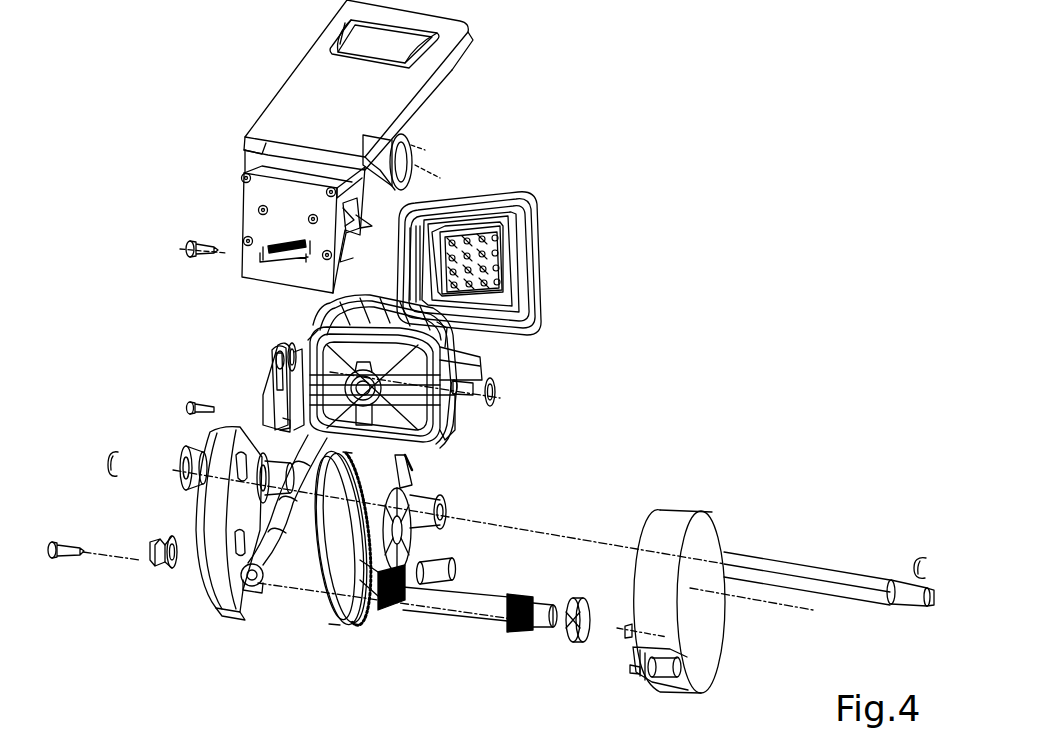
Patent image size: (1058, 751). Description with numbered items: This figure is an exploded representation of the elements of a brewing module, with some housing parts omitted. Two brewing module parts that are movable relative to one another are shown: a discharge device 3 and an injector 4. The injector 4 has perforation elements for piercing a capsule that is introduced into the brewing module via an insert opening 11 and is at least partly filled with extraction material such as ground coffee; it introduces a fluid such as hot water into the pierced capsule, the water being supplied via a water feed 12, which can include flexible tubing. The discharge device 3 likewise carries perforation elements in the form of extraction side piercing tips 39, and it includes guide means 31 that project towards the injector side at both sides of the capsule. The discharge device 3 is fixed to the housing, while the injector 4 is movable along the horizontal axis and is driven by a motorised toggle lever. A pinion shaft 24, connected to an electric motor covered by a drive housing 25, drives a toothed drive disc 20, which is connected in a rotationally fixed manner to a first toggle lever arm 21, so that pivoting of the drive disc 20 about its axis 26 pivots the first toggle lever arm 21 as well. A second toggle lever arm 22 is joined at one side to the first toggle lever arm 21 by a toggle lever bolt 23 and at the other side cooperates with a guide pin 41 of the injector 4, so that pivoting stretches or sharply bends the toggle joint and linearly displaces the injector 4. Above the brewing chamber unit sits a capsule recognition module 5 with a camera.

The discharge device 3 is at (431, 241).
The injector 4 is at (434, 372).
The capsule recognition module 5 is at (209, 204).
The insert opening 11 is at (330, 60).
The water feed 12 is at (278, 566).
The toothed drive disc 20 is at (337, 627).
The first toggle lever arm 21 is at (407, 540).
The second toggle lever arm 22 is at (266, 453).
The toggle lever bolt 23 is at (433, 582).
The pinion shaft 24 is at (456, 612).
The drive housing 25 is at (700, 655).
The axis 26 is at (783, 570).
The guide means 31 is at (503, 262).
The extraction side piercing tips 39 is at (495, 283).
The guide pin 41 is at (500, 393).